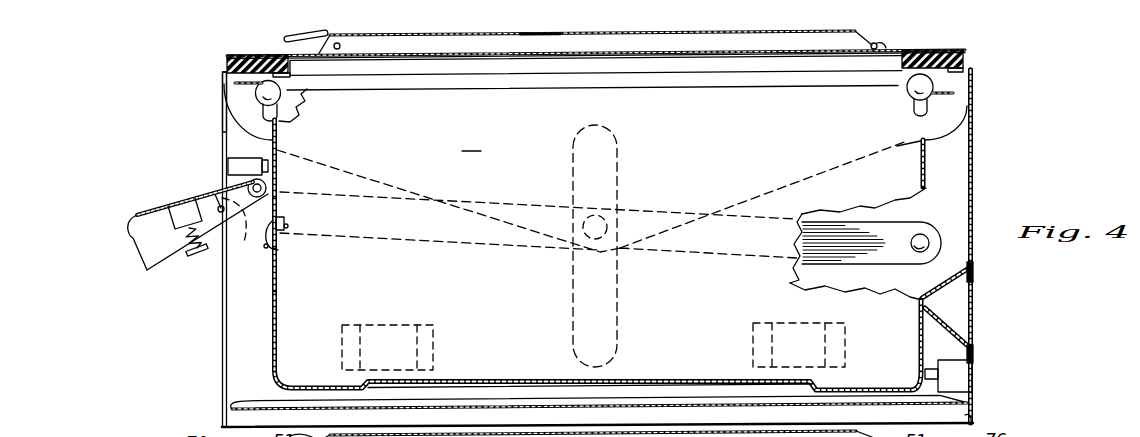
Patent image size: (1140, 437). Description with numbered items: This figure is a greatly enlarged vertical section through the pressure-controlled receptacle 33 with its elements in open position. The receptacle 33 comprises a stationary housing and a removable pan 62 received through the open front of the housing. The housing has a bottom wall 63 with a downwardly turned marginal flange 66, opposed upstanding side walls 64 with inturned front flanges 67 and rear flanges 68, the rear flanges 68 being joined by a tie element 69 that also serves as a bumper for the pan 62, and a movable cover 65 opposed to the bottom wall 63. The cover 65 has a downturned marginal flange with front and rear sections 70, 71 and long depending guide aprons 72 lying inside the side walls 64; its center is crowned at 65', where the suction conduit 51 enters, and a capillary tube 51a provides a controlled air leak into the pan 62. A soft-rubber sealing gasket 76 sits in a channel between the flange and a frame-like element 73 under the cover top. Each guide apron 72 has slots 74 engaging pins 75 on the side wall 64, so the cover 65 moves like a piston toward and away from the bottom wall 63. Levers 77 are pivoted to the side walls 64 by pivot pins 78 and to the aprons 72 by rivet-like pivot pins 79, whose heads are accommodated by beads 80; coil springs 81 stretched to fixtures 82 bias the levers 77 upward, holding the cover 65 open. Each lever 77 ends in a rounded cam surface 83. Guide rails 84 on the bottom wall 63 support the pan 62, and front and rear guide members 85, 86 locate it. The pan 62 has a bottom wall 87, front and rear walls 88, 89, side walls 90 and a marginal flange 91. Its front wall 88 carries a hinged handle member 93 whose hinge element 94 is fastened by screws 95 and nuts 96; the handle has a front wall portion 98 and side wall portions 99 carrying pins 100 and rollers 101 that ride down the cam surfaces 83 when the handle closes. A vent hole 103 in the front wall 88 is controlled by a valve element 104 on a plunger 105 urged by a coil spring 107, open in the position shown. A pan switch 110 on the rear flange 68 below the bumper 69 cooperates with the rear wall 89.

The pressure-controlled receptacle 33 is at (473, 141).
The suction conduit 51 is at (280, 39).
The capillary tube 51a is at (886, 50).
The pan 62 is at (258, 339).
The bottom wall 63 is at (225, 424).
The side walls 64 is at (973, 182).
The cover 65 is at (596, 43).
The crown 65' is at (540, 72).
The marginal flange 66 is at (973, 418).
The front flanges 67 is at (222, 110).
The rear flanges 68 is at (973, 138).
The tie element 69 is at (960, 300).
The front section 70 is at (230, 70).
The rear section 71 is at (974, 70).
The guide aprons 72 is at (805, 178).
The frame-like element 73 is at (396, 70).
The slots 74 is at (278, 122).
The pins 75 is at (308, 93).
The sealing gasket 76 is at (228, 62).
The levers 77 is at (863, 242).
The pivot pin 78 is at (928, 243).
The pivot pin 79 is at (603, 222).
The bead 80 is at (617, 153).
The coil spring 81 is at (282, 192).
The fixture 82 is at (243, 159).
The cam surface 83 is at (236, 230).
The guide rails 84 is at (262, 400).
The front guide members 85 is at (397, 336).
The rear guide members 86 is at (781, 330).
The bottom wall 87 is at (476, 380).
The front wall 88 is at (276, 332).
The rear wall 89 is at (926, 158).
The side walls 90 is at (887, 302).
The marginal flange 91 is at (237, 84).
The handle member 93 is at (126, 231).
The hinge element 94 is at (272, 249).
The screws 95 is at (287, 226).
The nuts 96 is at (284, 222).
The front wall portion 98 is at (142, 212).
The side wall portions 99 is at (145, 237).
The pins 100 is at (249, 190).
The rollers 101 is at (216, 192).
The vent hole 103 is at (277, 264).
The valve element 104 is at (203, 254).
The plunger 105 is at (173, 208).
The coil spring 107 is at (183, 250).
The pan switch 110 is at (962, 378).